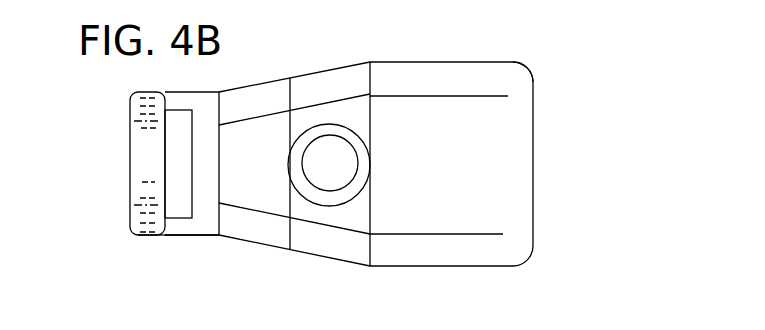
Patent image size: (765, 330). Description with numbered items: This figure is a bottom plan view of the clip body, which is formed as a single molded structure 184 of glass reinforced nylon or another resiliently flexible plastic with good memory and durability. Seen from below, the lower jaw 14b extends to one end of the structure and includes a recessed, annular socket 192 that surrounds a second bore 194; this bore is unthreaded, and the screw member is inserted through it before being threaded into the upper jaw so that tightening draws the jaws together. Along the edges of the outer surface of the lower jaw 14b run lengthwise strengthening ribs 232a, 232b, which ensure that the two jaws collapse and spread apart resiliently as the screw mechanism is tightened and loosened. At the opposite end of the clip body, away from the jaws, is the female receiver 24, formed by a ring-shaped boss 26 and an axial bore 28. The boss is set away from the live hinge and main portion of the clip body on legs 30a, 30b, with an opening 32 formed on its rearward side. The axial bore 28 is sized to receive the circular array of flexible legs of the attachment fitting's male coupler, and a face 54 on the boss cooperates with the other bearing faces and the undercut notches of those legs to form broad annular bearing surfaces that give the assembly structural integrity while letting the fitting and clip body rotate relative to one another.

The lower jaw 14b is at (533, 163).
The molded structure 184 is at (517, 66).
The annular socket 192 is at (362, 150).
The second bore 194 is at (323, 190).
The strengthening rib 232a is at (410, 72).
The strengthening rib 232b is at (422, 250).
The female receiver 24 is at (128, 168).
The ring-shaped boss 26 is at (139, 237).
The axial bore 28 is at (138, 122).
The bearing face 54 is at (130, 187).
The leg 30a is at (177, 92).
The leg 30b is at (192, 238).
The opening 32 is at (177, 194).